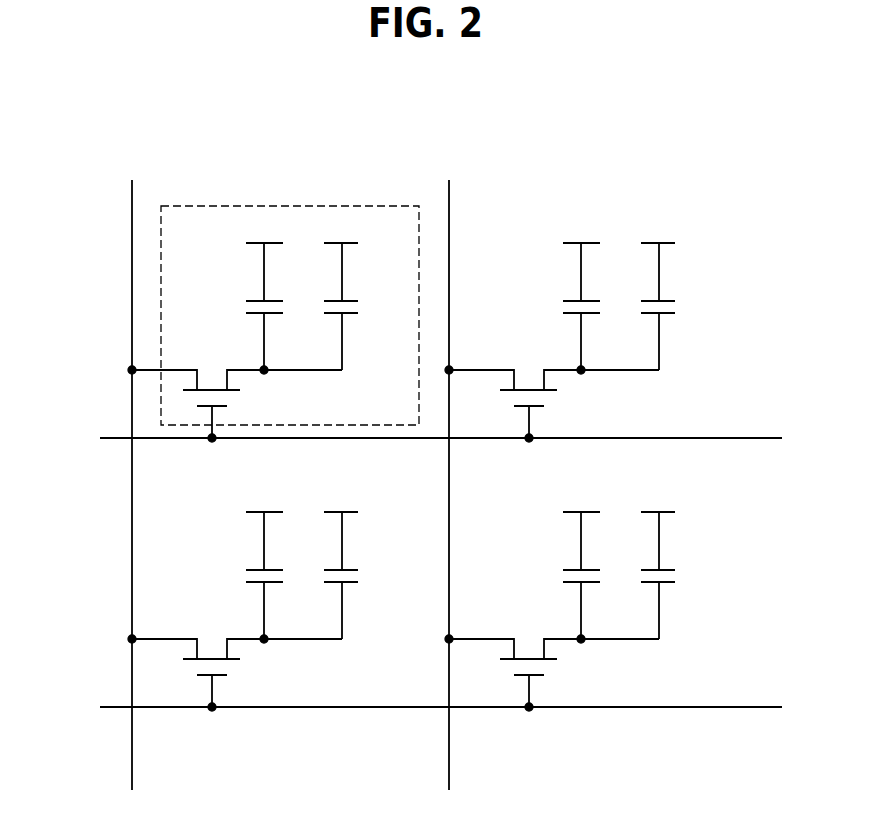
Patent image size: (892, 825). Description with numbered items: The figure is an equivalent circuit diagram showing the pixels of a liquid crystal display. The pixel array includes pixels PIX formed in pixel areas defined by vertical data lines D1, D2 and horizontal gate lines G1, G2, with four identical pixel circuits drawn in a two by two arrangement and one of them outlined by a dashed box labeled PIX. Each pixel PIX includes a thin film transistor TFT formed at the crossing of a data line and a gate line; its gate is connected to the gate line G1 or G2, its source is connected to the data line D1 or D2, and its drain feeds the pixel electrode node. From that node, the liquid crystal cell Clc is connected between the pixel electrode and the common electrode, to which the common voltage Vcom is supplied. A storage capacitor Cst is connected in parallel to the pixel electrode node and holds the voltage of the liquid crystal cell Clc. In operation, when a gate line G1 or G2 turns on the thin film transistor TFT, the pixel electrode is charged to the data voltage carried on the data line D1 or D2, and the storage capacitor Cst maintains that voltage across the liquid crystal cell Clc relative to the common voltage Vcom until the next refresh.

The data line D1 is at (130, 469).
The data line D2 is at (448, 469).
The gate line G1 is at (427, 440).
The gate line G2 is at (427, 709).
The pixel PIX is at (283, 206).
The thin film transistor TFT is at (393, 538).
The liquid crystal cell capacitor Clc is at (400, 443).
The storage capacitor Cst is at (523, 441).
The common voltage Vcom is at (453, 362).